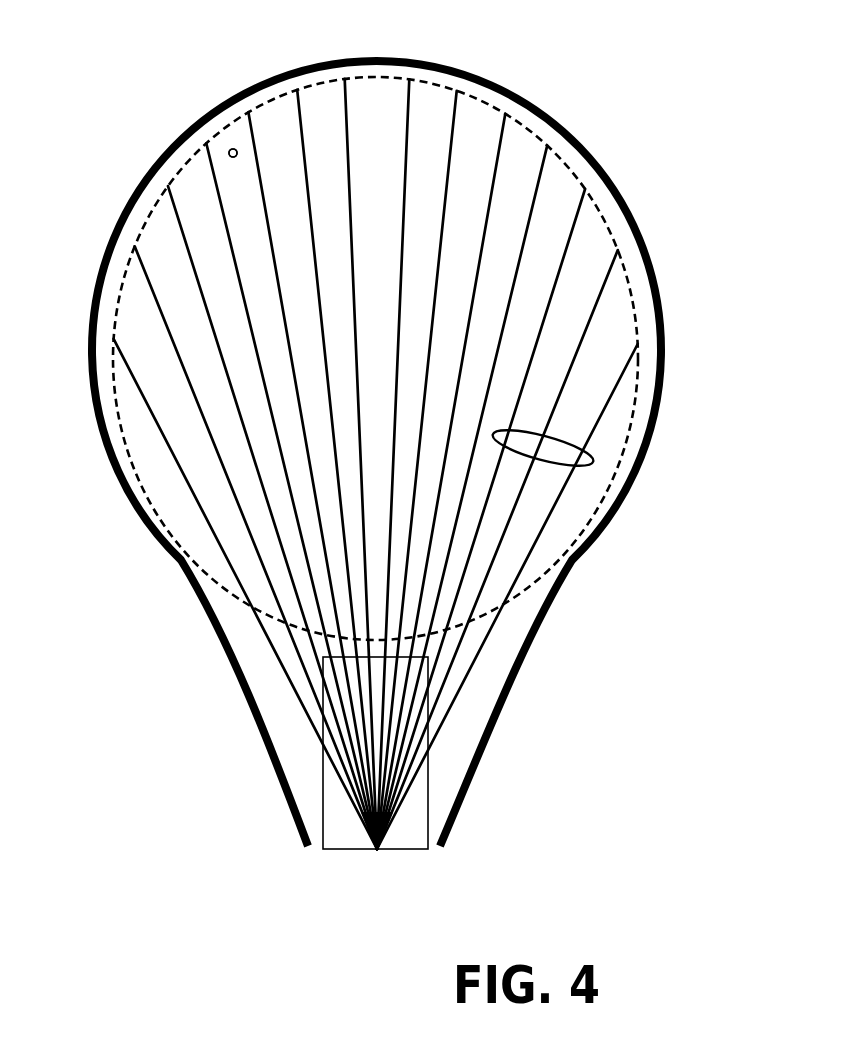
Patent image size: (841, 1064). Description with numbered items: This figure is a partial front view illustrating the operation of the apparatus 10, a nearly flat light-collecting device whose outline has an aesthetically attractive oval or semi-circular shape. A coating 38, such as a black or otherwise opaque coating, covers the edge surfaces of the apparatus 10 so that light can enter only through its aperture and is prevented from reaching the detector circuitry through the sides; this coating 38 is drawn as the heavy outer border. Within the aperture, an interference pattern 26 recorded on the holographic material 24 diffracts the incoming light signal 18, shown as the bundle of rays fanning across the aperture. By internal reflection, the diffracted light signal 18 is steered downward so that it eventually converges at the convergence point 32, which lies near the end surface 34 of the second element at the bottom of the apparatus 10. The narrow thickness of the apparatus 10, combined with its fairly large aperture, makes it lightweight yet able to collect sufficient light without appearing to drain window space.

The apparatus 10 is at (688, 126).
The coating 38 is at (257, 83).
The holographic material 24 is at (229, 151).
The interference pattern 26 is at (233, 153).
The light signal 18 is at (593, 462).
The end surface 34 is at (418, 852).
The convergence point 32 is at (378, 860).